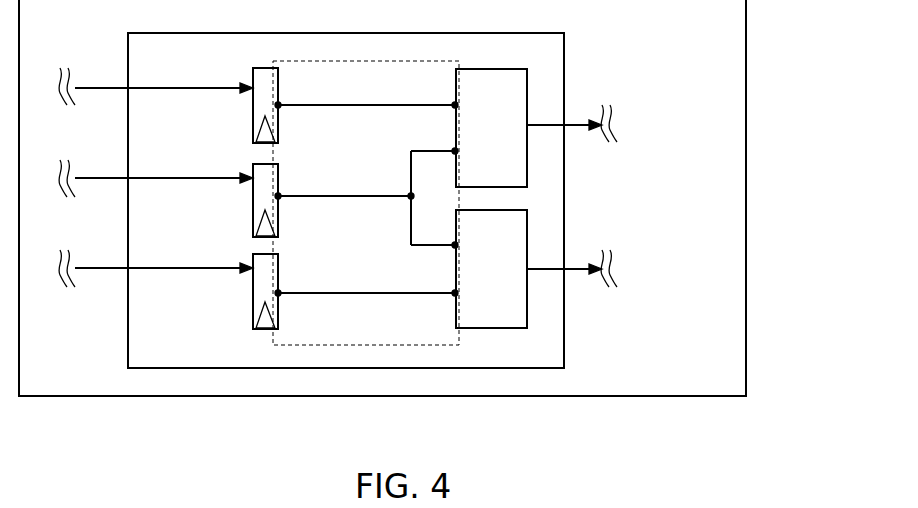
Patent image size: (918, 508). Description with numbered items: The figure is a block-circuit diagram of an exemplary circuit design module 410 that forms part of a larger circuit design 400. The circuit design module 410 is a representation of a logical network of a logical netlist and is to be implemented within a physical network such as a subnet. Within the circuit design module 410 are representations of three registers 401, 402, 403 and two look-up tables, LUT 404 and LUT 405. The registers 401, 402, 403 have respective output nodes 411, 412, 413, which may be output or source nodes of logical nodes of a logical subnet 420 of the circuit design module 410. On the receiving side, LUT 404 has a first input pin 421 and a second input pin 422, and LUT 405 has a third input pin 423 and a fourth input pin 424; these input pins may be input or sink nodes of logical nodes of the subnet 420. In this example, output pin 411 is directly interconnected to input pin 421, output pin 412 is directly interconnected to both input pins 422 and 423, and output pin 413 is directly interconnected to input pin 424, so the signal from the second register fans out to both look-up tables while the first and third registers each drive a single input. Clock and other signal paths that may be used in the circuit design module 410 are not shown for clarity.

The circuit design 400 is at (750, 100).
The circuit design module 410 is at (567, 196).
The logical subnet 420 is at (407, 60).
The register 401 is at (249, 116).
The register 402 is at (249, 206).
The register 403 is at (249, 296).
The LUT 404 is at (536, 128).
The LUT 405 is at (536, 269).
The output node 411 is at (280, 108).
The output node 412 is at (280, 199).
The output node 413 is at (280, 296).
The input pin 421 is at (452, 106).
The input pin 422 is at (454, 151).
The input pin 423 is at (452, 245).
The input pin 424 is at (454, 292).